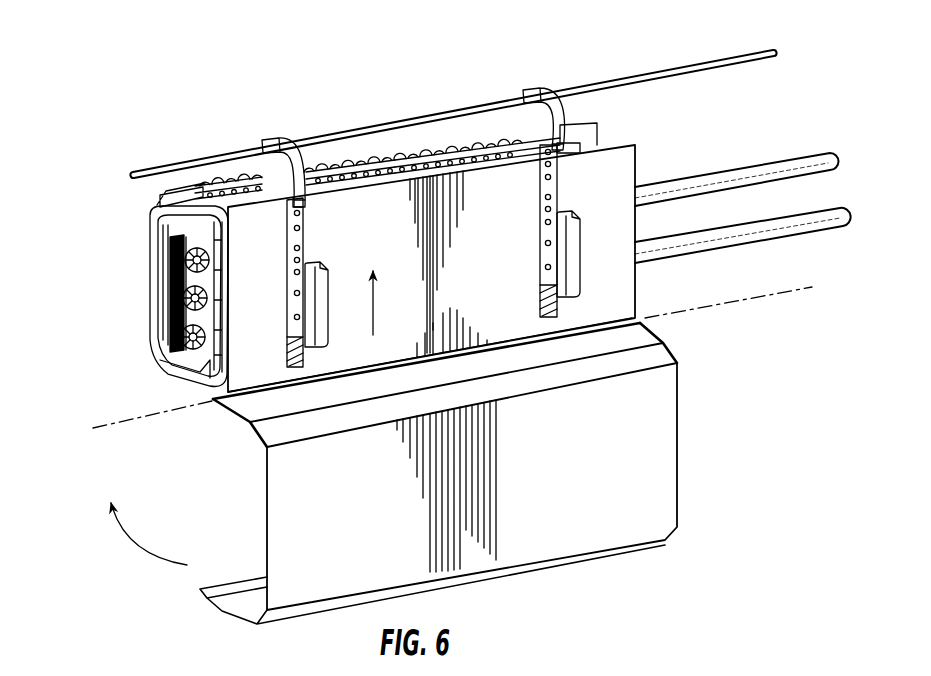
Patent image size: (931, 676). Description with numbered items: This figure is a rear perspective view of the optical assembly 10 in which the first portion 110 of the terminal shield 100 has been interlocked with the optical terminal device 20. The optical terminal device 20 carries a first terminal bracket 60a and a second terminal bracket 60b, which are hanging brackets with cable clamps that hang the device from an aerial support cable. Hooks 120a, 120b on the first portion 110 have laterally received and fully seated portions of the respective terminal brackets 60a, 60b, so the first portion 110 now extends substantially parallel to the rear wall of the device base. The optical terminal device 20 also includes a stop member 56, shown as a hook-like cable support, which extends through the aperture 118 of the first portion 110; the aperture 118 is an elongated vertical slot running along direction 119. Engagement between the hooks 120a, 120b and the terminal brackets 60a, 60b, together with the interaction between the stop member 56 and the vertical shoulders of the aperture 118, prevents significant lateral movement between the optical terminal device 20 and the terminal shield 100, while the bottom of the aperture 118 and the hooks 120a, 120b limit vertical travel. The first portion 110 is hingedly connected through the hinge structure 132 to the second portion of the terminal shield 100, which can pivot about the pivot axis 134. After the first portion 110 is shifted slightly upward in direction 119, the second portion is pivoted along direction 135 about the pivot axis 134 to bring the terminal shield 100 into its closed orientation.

The optical assembly 10 is at (745, 343).
The optical terminal device 20 is at (137, 355).
The stop member 56 is at (573, 268).
The first terminal bracket 60a is at (514, 116).
The second terminal bracket 60b is at (293, 152).
The terminal shield 100 is at (685, 445).
The first portion 110 is at (647, 168).
The aperture 118 is at (288, 278).
The direction 119 is at (376, 313).
The hook 120a is at (514, 142).
The hook 120b is at (276, 186).
The hinge structure 132 is at (212, 401).
The pivot axis 134 is at (783, 290).
The direction 135 is at (141, 551).